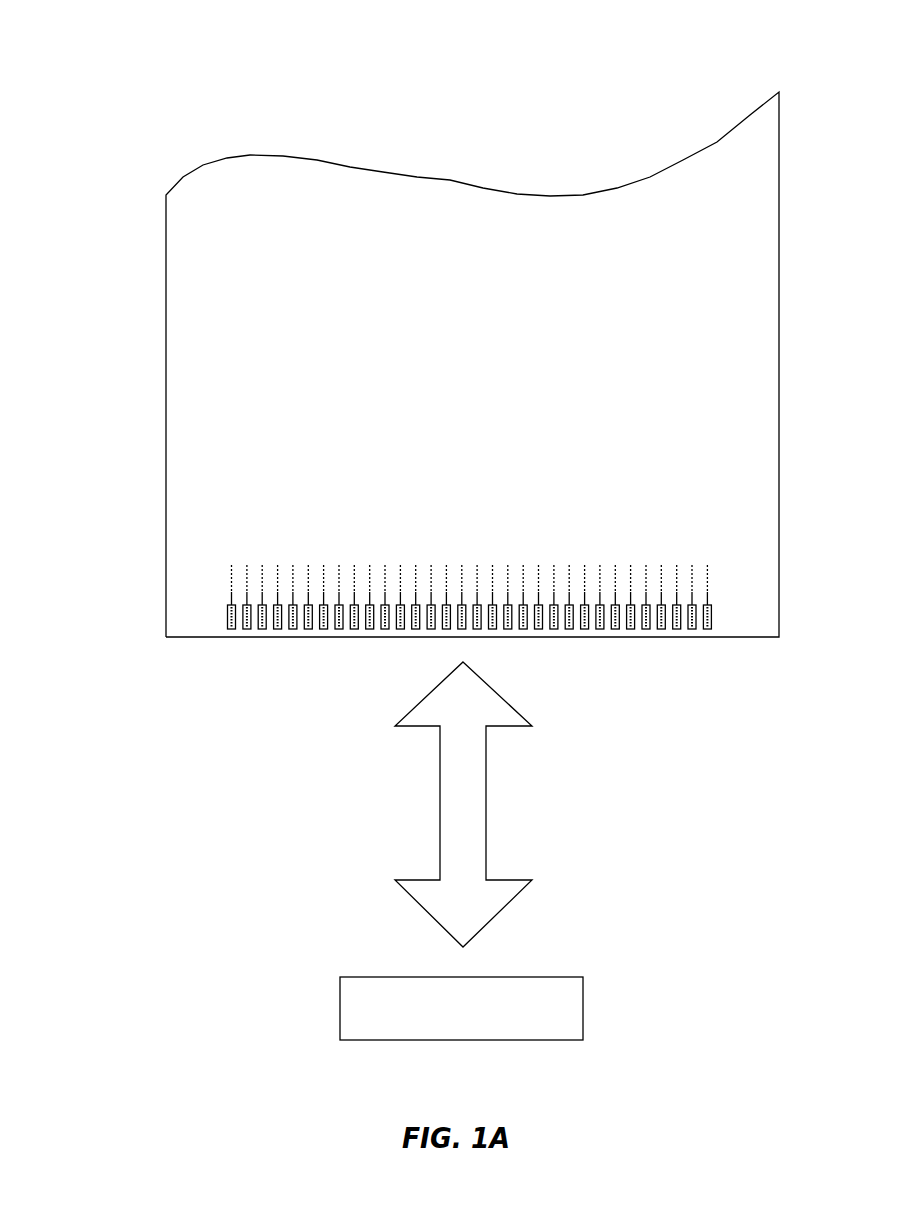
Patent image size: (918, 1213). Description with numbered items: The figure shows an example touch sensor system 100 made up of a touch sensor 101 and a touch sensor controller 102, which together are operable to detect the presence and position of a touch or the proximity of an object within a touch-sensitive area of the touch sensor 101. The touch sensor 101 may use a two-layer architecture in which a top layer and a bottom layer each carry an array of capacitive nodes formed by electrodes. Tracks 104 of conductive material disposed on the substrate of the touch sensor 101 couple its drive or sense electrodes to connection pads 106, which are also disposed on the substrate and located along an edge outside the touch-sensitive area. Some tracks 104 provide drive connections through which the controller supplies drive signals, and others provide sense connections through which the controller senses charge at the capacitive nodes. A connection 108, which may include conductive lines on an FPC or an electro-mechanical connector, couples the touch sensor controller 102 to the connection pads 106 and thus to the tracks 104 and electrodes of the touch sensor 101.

The touch sensor system 100 is at (231, 62).
The touch sensor 101 is at (216, 292).
The touch sensor controller 102 is at (339, 1000).
The tracks 104 is at (229, 592).
The connection pads 106 is at (226, 613).
The connection 108 is at (439, 787).